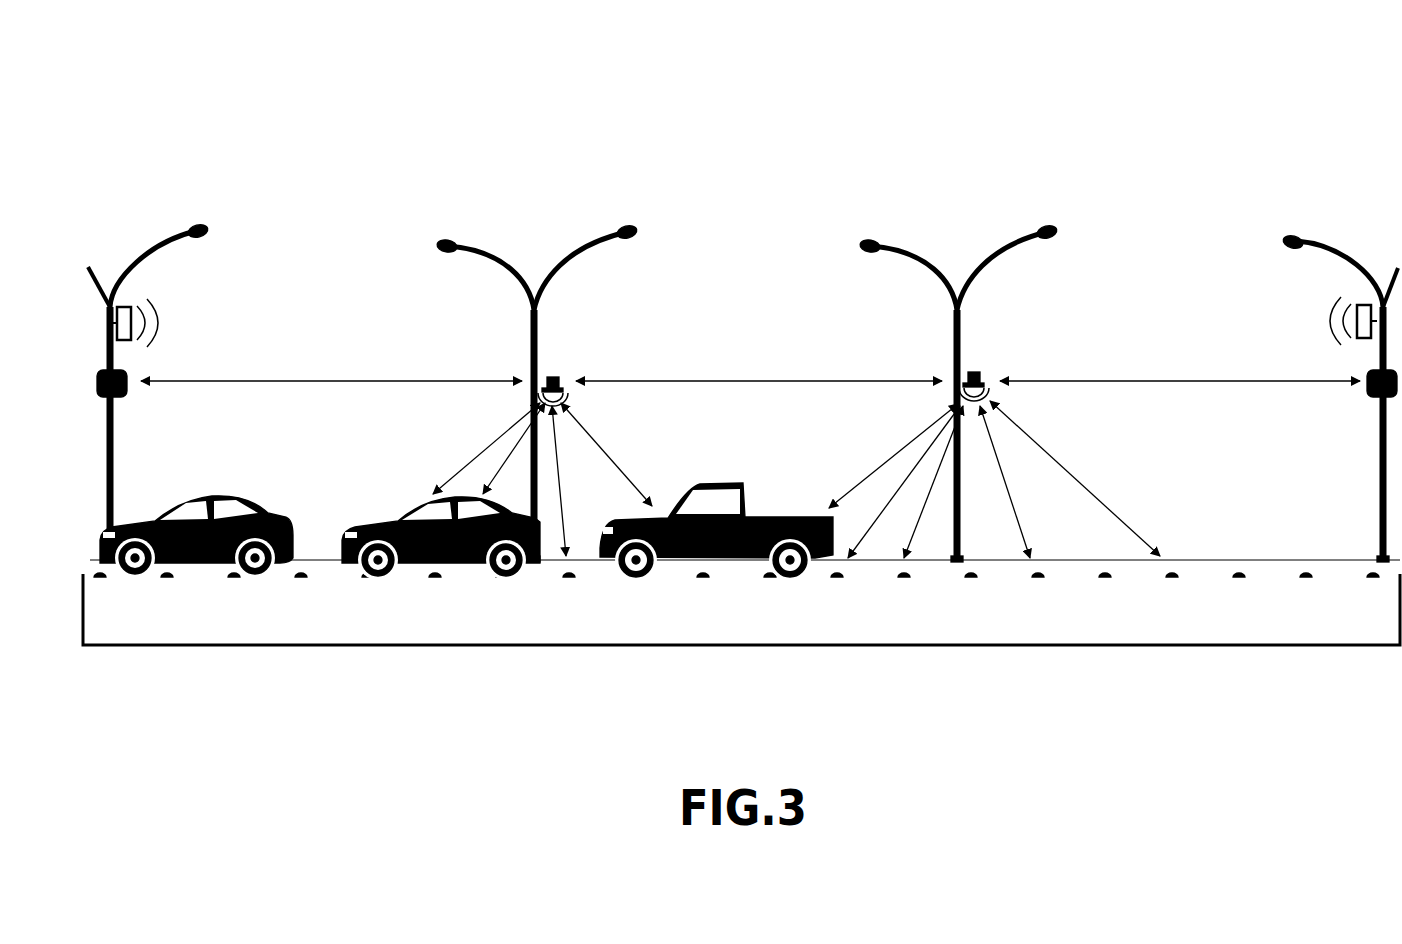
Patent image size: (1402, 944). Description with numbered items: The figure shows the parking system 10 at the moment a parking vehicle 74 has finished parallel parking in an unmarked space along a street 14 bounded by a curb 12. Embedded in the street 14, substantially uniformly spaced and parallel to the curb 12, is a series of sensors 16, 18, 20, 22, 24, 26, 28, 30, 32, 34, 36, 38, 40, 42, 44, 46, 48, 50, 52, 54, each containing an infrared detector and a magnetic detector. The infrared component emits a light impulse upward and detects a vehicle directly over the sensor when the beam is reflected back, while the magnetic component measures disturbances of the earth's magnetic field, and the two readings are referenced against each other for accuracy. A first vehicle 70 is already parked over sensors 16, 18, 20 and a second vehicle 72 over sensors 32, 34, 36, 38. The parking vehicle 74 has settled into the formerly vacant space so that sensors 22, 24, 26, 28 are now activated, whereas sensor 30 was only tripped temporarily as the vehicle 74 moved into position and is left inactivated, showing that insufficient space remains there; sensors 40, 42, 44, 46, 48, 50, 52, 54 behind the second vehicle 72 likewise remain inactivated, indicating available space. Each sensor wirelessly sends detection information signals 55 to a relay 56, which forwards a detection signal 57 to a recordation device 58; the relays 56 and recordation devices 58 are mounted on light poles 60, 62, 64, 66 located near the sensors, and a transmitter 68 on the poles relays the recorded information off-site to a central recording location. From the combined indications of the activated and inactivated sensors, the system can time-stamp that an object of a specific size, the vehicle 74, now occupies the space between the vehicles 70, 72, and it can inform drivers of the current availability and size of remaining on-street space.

The parking system 10 is at (713, 176).
The curb 12 is at (318, 558).
The street 14 is at (743, 645).
The embedded sensor 16 is at (100, 589).
The embedded sensor 18 is at (167, 589).
The embedded sensor 20 is at (234, 589).
The embedded sensor 22 is at (301, 589).
The embedded sensor 24 is at (368, 589).
The embedded sensor 26 is at (435, 589).
The embedded sensor 28 is at (502, 589).
The embedded sensor 30 is at (569, 589).
The embedded sensor 32 is at (636, 589).
The embedded sensor 34 is at (703, 589).
The embedded sensor 36 is at (770, 589).
The embedded sensor 38 is at (837, 589).
The embedded sensor 40 is at (904, 589).
The embedded sensor 42 is at (971, 589).
The embedded sensor 44 is at (1038, 589).
The embedded sensor 46 is at (1105, 589).
The embedded sensor 48 is at (1172, 589).
The embedded sensor 50 is at (1239, 589).
The embedded sensor 52 is at (1306, 589).
The embedded sensor 54 is at (1373, 589).
The detection information signals 55 is at (501, 464).
The relay 56 is at (554, 372).
The detection signal 57 is at (290, 376).
The recordation device 58 is at (130, 394).
The light pole 60 is at (153, 226).
The light pole 62 is at (498, 243).
The light pole 64 is at (915, 241).
The light pole 66 is at (1327, 238).
The transmitter 68 is at (134, 303).
The first vehicle 70 is at (218, 486).
The second vehicle 72 is at (720, 470).
The parking vehicle 74 is at (412, 498).